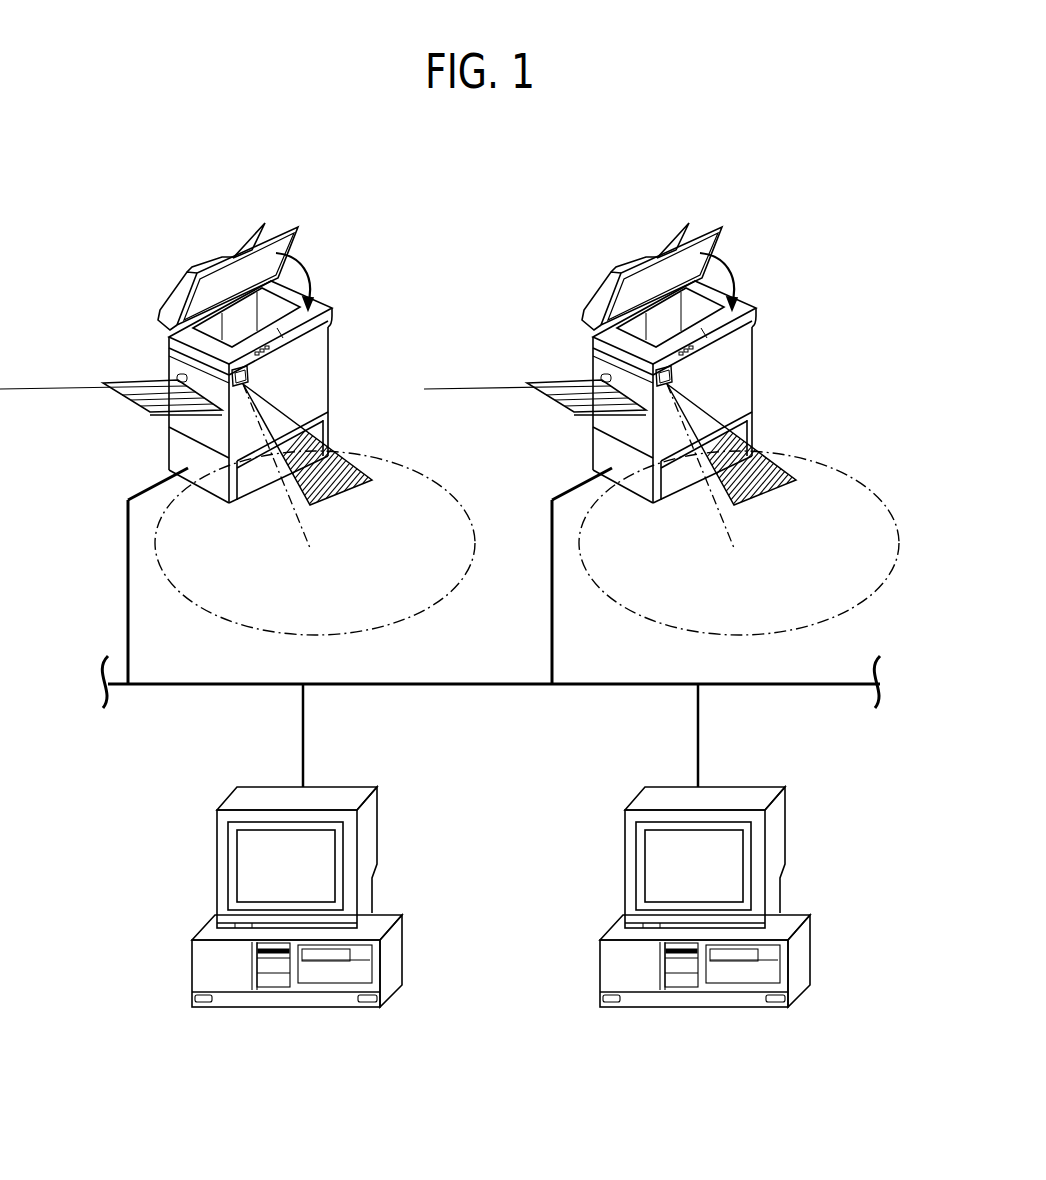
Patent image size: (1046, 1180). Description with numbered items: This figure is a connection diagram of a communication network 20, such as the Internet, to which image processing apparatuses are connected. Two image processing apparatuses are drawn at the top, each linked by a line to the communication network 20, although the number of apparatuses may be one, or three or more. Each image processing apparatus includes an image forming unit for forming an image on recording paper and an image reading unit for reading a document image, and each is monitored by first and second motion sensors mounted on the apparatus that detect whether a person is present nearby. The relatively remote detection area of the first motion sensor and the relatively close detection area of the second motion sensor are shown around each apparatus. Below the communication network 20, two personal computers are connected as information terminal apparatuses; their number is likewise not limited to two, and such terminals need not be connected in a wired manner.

The communication network 20 is at (440, 683).